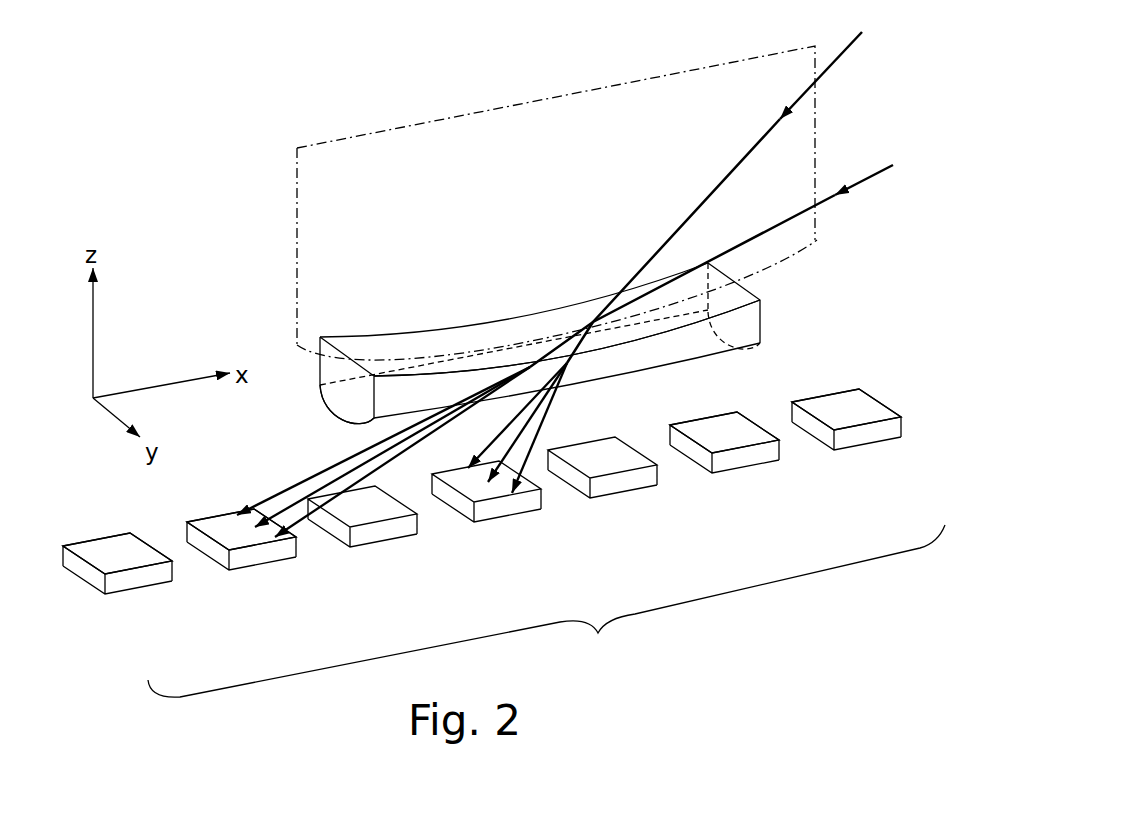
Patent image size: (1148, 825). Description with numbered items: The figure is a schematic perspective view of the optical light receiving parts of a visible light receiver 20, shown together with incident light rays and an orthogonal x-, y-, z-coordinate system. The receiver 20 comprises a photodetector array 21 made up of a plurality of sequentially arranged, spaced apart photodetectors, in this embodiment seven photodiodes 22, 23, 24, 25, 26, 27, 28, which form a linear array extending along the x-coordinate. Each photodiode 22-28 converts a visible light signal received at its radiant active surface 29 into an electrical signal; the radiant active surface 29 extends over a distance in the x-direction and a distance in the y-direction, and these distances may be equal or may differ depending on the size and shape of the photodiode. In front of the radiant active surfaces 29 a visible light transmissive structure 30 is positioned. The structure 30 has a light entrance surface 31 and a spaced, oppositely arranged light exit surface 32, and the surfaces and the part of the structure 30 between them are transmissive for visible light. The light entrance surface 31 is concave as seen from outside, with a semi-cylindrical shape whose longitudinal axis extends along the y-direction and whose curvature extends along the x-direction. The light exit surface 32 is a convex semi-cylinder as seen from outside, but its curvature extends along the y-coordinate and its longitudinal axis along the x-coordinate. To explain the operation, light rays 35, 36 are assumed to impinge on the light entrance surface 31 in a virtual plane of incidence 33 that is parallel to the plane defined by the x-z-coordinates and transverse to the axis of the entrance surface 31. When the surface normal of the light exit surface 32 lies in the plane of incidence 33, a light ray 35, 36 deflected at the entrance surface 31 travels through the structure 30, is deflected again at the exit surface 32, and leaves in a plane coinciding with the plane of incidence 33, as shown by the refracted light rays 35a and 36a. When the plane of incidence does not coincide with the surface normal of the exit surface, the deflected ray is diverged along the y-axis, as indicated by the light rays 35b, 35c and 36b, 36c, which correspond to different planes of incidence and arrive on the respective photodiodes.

The visible light receiver 20 is at (187, 202).
The photodetector array 21 is at (546, 611).
The photodiode 22 is at (147, 580).
The photodiode 23 is at (270, 557).
The photodiode 24 is at (403, 532).
The photodiode 25 is at (518, 508).
The photodiode 26 is at (642, 485).
The photodiode 27 is at (768, 460).
The photodiode 28 is at (877, 435).
The radiant active surface 29 is at (220, 520).
The visible light transmissive structure 30 is at (762, 329).
The light entrance surface 31 is at (743, 298).
The light exit surface 32 is at (346, 418).
The plane of incidence 33 is at (366, 135).
The light ray 35 is at (733, 184).
The refracted light ray 35a is at (455, 441).
The light ray 35b is at (535, 455).
The light ray 35c is at (470, 464).
The light ray 36 is at (734, 256).
The refracted light ray 36a is at (297, 490).
The light ray 36b is at (302, 520).
The light ray 36c is at (237, 510).